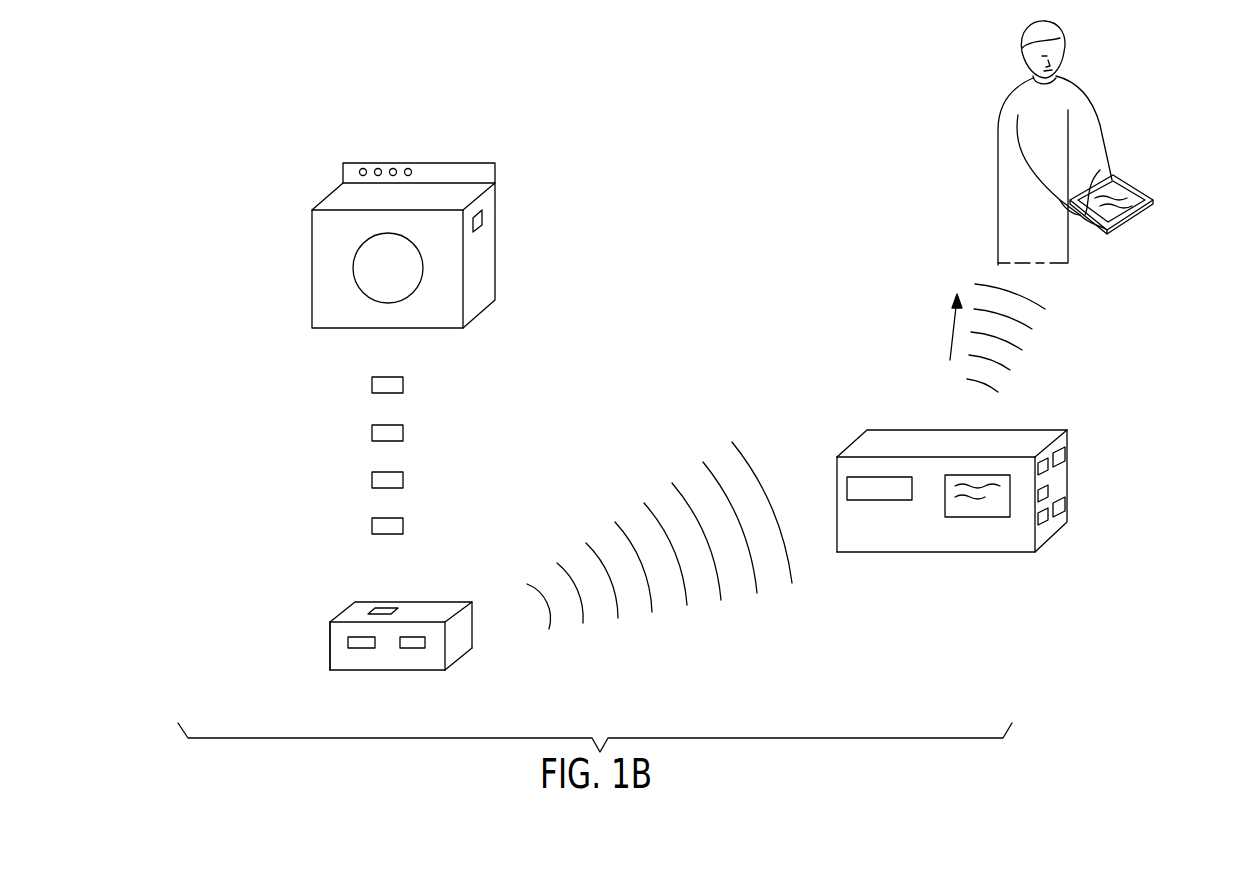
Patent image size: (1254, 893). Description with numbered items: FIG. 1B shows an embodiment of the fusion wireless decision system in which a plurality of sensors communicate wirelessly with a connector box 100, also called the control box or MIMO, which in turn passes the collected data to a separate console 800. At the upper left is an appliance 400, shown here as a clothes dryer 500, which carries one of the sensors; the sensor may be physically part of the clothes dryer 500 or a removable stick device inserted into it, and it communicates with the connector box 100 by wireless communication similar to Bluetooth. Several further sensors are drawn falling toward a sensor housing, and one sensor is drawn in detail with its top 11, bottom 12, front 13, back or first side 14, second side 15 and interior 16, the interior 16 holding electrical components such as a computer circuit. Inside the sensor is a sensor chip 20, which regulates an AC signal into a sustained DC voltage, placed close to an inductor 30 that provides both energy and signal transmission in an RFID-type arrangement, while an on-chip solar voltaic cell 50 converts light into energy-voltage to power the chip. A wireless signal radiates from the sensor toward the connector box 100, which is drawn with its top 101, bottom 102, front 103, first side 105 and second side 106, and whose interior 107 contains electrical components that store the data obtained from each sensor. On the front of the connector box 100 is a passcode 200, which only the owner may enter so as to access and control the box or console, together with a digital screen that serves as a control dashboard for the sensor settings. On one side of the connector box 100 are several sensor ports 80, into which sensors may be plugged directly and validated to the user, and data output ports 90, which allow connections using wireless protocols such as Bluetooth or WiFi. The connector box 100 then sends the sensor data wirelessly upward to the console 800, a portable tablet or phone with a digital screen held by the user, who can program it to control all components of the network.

The top 11 is at (422, 602).
The bottom 12 is at (422, 672).
The front 13 is at (400, 665).
The back / first side 14 is at (477, 622).
The second side 15 is at (457, 645).
The interior 16 is at (330, 645).
The sensor chip 20 is at (362, 650).
The inductor 30 is at (387, 608).
The on-chip solar voltaic cell 50 is at (413, 636).
The sensor ports 80 is at (1065, 512).
The data output ports 90 is at (1060, 452).
The connector box 100 is at (962, 506).
The top 101 is at (967, 435).
The bottom 102 is at (937, 553).
The front 103 is at (860, 538).
The first side 105 is at (1067, 477).
The second side 106 is at (837, 525).
The interior 107 is at (930, 465).
The passcode 200 is at (847, 488).
The appliance 400 is at (360, 219).
The clothes dryer 500 is at (325, 252).
The console 800 is at (1146, 189).